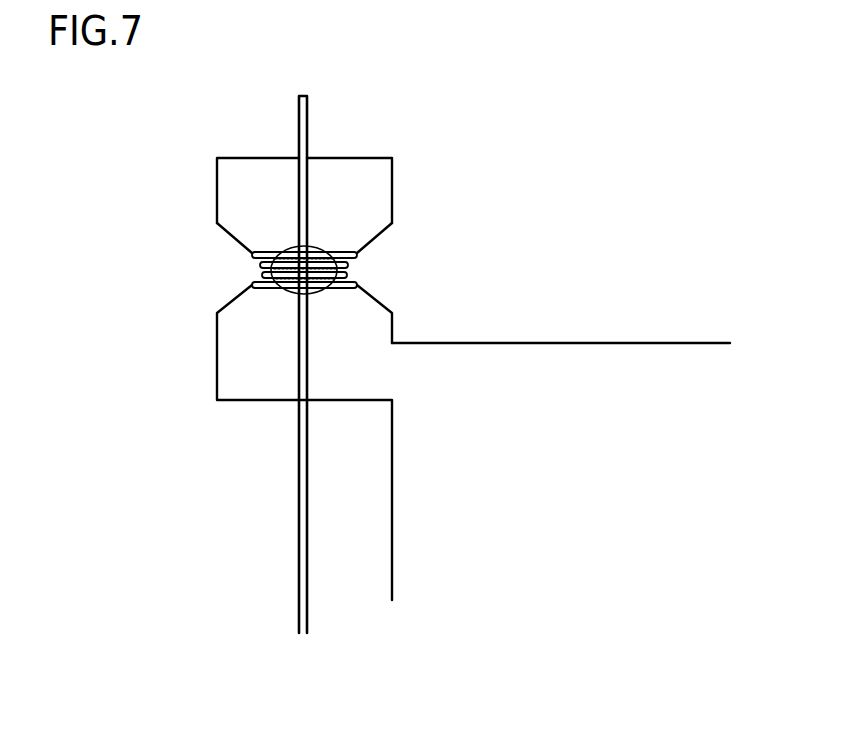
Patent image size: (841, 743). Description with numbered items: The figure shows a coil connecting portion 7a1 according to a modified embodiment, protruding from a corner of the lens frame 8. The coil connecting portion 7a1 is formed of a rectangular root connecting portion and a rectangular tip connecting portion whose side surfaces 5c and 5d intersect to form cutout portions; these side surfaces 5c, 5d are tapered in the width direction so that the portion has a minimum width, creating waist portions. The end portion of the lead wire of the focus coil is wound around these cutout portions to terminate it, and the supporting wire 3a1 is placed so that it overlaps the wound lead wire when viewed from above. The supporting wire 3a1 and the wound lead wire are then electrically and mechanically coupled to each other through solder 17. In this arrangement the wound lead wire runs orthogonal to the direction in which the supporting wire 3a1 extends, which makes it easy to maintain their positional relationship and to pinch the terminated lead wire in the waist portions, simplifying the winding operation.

The coil connecting portion 7a1 is at (230, 138).
The side surface of tip connecting portion 5c is at (229, 233).
The side surface of root connecting portion 5d is at (229, 303).
The solder 17 is at (320, 252).
The lens frame 8 is at (591, 380).
The supporting wire 3a1 is at (298, 506).